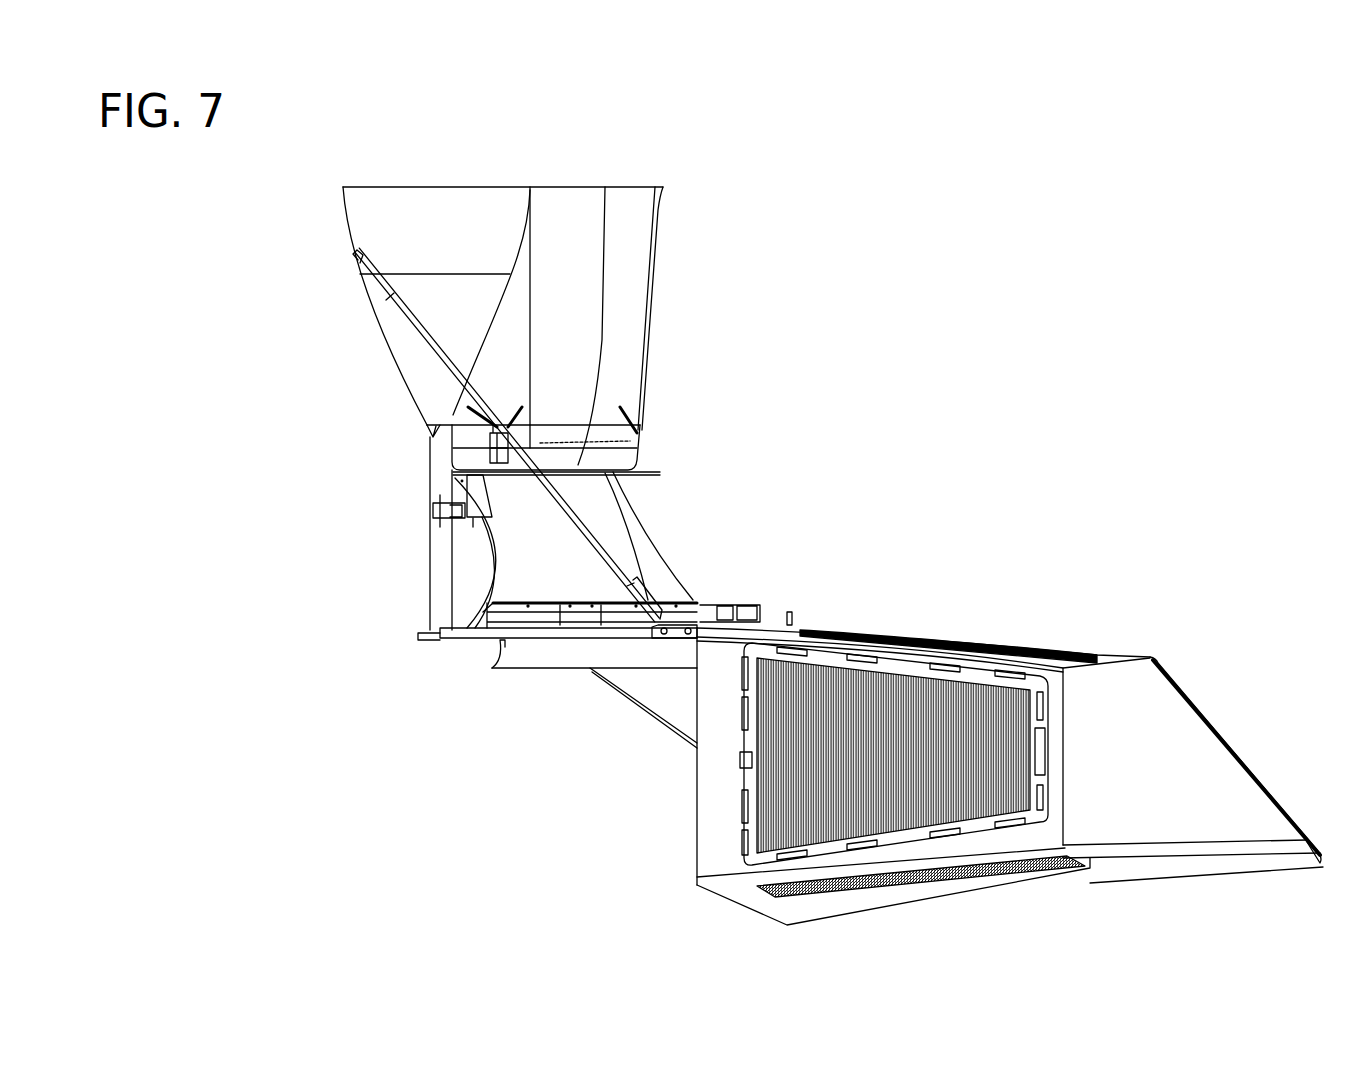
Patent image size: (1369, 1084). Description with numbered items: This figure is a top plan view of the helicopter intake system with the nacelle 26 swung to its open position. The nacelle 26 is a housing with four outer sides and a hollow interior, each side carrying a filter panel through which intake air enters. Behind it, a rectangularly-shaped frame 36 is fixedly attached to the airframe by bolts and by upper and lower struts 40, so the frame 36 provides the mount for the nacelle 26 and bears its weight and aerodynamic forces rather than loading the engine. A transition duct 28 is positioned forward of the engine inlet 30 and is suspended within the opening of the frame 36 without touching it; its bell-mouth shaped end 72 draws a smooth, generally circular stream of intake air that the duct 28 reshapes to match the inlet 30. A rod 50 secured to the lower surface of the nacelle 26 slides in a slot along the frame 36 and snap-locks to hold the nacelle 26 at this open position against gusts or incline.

The nacelle 26 is at (943, 640).
The transition duct 28 is at (637, 525).
The inlet 30 is at (652, 303).
The frame 36 is at (445, 640).
The struts 40 is at (442, 368).
The rod 50 is at (635, 695).
The bell-mouth shaped end 72 is at (510, 668).